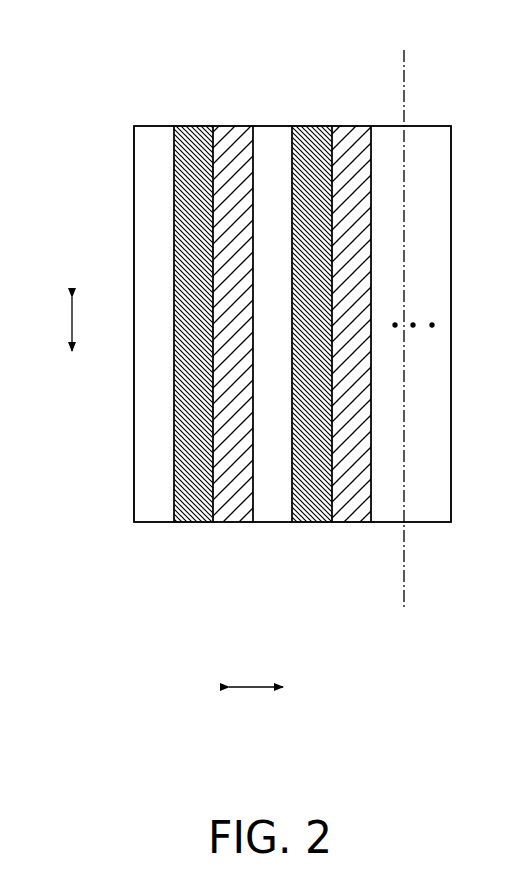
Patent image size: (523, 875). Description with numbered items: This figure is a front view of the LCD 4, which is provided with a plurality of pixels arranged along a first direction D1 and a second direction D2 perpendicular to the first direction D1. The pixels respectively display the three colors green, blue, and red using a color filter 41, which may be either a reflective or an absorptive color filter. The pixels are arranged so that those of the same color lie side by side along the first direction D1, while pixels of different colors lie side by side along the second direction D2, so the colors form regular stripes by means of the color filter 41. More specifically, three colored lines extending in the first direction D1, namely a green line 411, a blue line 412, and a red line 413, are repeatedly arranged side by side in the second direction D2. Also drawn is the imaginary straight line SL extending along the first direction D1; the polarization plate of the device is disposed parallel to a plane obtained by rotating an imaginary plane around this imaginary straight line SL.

The LCD 4 is at (145, 100).
The color filter 41 is at (425, 142).
The green (G) line 411 is at (156, 522).
The blue (B) line 412 is at (193, 522).
The red (R) line 413 is at (233, 522).
The imaginary straight line SL is at (404, 562).
The first direction D1 is at (50, 324).
The second direction D2 is at (256, 670).